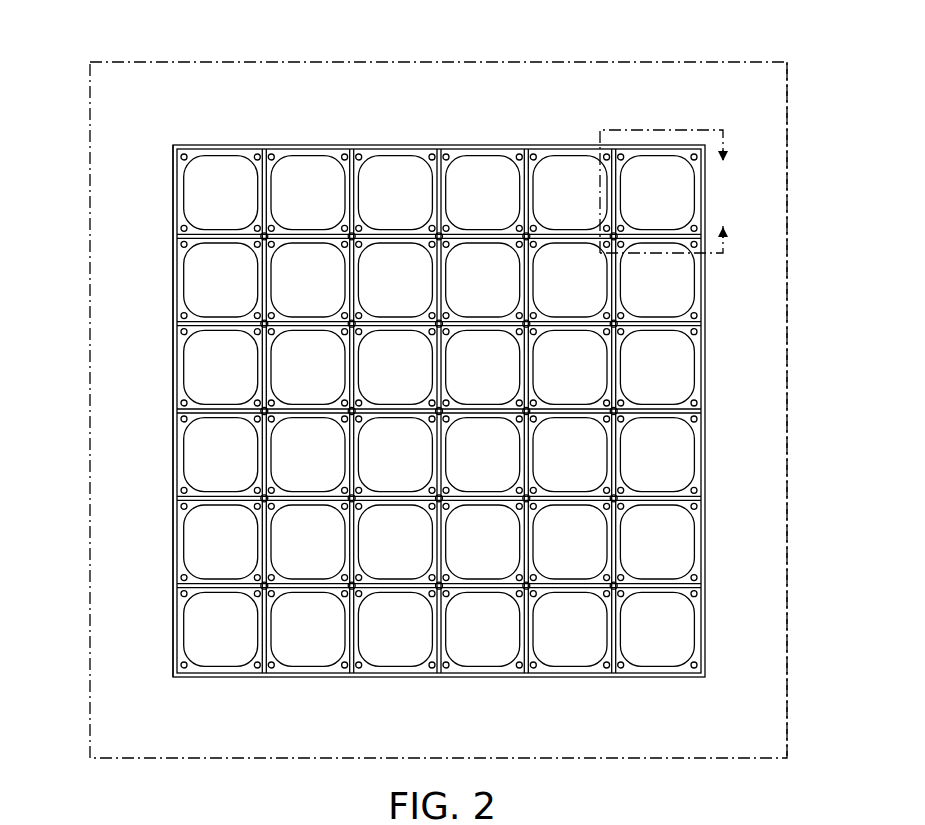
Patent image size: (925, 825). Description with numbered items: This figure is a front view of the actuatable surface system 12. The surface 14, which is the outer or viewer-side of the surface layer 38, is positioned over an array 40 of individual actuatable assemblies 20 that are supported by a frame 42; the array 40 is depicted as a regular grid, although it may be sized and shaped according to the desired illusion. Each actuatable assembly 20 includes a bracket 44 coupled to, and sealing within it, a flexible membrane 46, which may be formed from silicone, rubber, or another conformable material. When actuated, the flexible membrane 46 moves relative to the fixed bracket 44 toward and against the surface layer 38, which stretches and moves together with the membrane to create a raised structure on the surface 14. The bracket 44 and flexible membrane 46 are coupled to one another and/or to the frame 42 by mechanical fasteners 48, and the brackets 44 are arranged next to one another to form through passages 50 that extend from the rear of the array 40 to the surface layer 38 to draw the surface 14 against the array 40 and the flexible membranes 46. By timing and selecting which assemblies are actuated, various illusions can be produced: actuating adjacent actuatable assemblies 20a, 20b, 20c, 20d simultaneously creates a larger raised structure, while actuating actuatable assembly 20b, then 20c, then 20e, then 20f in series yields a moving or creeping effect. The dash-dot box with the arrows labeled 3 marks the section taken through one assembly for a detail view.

The actuatable surface system 12 is at (100, 47).
The surface 14 is at (738, 632).
The actuatable assembly 20 is at (655, 170).
The actuatable assembly 20a is at (195, 548).
The actuatable assembly 20b is at (200, 640).
The actuatable assembly 20c is at (285, 540).
The actuatable assembly 20d is at (313, 645).
The actuatable assembly 20e is at (375, 462).
The actuatable assembly 20f is at (463, 375).
The surface layer 38 is at (789, 410).
The array 40 is at (405, 407).
The frame 42 is at (226, 146).
The bracket 44 is at (176, 195).
The flexible membrane 46 is at (395, 648).
The mechanical fastener 48 is at (354, 153).
The through passage 50 is at (353, 236).
The section line 3 is at (673, 191).